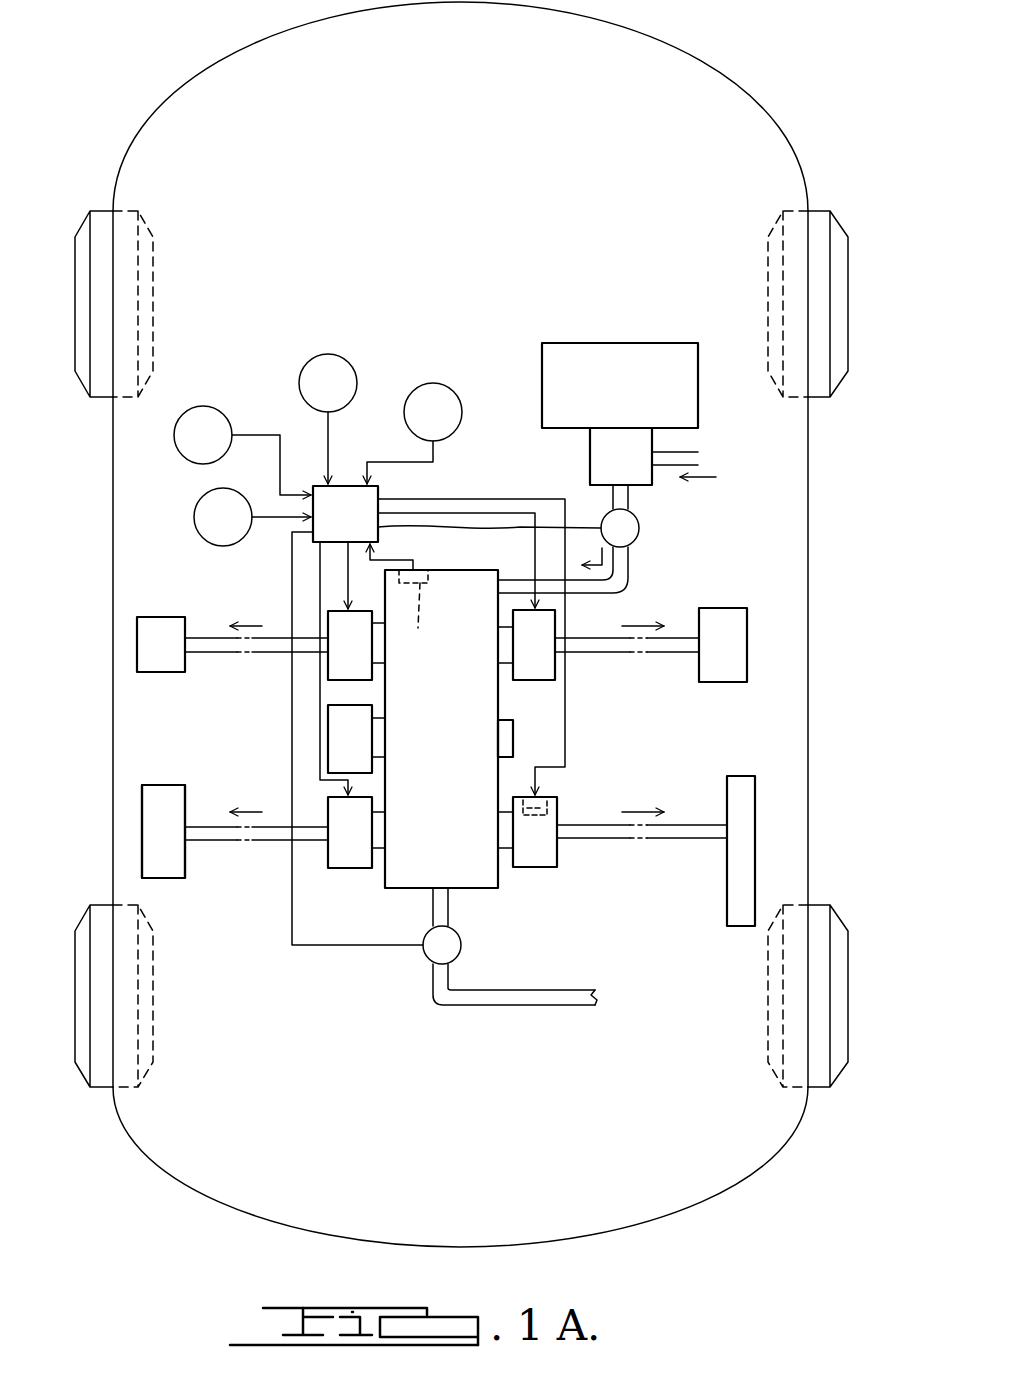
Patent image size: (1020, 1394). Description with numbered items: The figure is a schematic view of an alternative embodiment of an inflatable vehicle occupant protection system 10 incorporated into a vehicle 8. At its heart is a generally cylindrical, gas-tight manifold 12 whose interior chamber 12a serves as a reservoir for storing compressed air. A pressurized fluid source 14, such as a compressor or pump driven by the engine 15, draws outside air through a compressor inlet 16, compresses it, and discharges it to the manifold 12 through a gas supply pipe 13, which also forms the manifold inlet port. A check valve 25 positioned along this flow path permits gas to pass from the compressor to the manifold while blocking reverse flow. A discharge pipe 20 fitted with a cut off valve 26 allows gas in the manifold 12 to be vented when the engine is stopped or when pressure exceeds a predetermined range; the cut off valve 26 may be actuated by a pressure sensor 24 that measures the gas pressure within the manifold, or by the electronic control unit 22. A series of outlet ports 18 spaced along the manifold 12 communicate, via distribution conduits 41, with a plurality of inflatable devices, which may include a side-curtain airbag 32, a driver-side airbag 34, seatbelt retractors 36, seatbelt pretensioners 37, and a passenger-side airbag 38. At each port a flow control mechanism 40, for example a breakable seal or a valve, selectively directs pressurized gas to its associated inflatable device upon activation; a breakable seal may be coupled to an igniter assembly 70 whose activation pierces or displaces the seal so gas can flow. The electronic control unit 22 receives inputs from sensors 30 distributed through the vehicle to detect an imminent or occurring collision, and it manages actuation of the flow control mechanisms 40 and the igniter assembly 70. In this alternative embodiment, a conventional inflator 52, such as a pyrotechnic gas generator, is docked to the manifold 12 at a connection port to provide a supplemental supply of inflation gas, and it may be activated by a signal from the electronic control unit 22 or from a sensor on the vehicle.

The vehicle 8 is at (757, 108).
The inflatable vehicle occupant protection system 10 is at (825, 522).
The manifold 12 is at (445, 566).
The interior chamber 12a is at (475, 703).
The gas supply pipe 13 is at (622, 573).
The pressurized fluid source 14 is at (603, 462).
The engine 15 is at (620, 385).
The compressor inlet 16 is at (700, 457).
The outlet port 18 is at (498, 838).
The discharge pipe 20 is at (440, 998).
The electronic control unit 22 is at (446, 715).
The pressure sensor 24 is at (413, 613).
The check valve 25 is at (640, 522).
The cut off valve 26 is at (461, 945).
The sensors 30 is at (318, 450).
The side-curtain airbag 32 is at (735, 902).
The driver-side airbag 34 is at (163, 617).
The seatbelt retractor 36 is at (170, 870).
The seatbelt pretensioner 37 is at (163, 831).
The passenger-side airbag 38 is at (720, 675).
The flow control mechanism 40 is at (442, 739).
The distribution conduit 41 is at (272, 645).
The inflator 52 is at (356, 739).
The igniter assembly 70 is at (556, 812).